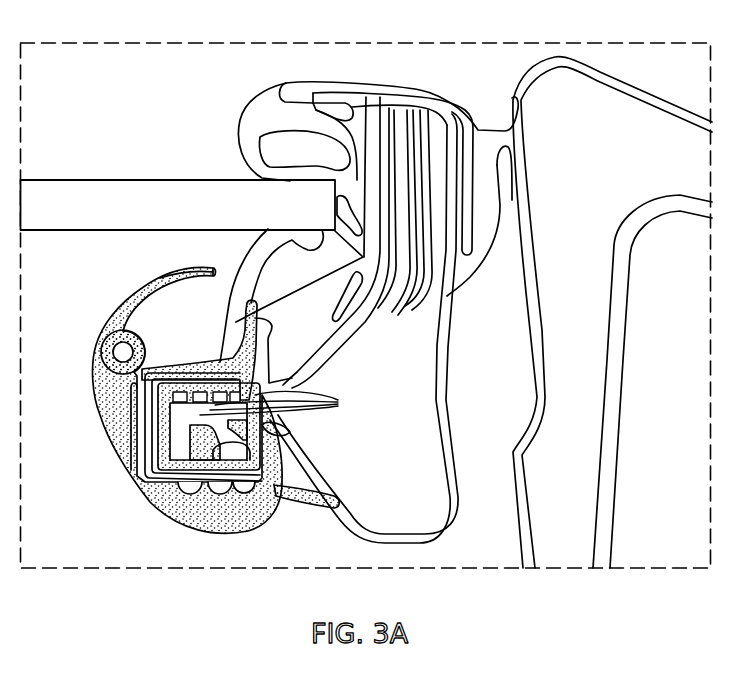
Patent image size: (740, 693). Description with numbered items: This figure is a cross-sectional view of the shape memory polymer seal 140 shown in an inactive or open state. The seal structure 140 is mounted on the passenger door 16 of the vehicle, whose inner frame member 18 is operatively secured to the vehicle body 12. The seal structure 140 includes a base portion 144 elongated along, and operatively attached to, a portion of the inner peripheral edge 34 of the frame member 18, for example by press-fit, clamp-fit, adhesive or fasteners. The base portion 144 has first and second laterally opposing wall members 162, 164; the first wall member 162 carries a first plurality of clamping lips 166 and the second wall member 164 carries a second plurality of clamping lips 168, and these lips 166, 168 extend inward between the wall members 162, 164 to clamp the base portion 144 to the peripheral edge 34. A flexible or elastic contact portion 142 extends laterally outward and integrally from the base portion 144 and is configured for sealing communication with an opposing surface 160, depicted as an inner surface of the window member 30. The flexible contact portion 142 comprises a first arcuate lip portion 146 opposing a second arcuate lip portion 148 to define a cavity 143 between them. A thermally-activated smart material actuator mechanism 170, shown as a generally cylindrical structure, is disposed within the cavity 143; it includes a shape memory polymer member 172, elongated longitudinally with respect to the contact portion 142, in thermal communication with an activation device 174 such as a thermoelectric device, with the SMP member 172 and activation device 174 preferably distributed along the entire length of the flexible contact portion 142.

The vehicle body 12 is at (640, 96).
The passenger door 16 is at (445, 407).
The inner frame member 18 is at (348, 345).
The window member 30 is at (113, 178).
The inner peripheral edge 34 is at (283, 437).
The shape memory polymer seal 140 is at (308, 520).
The flexible contact portion 142 is at (95, 322).
The cavity 143 is at (198, 282).
The base portion 144 is at (112, 453).
The first arcuate lip portion 146 is at (160, 272).
The second arcuate lip portion 148 is at (272, 328).
The surface 160 is at (153, 236).
The first wall member 162 is at (192, 500).
The second wall member 164 is at (250, 302).
The first plurality of clamping lips 166 is at (263, 505).
The second plurality of clamping lips 168 is at (287, 403).
The TASM actuator mechanism 170 is at (198, 268).
The shape memory polymer member 172 is at (103, 292).
The activation device 174 is at (97, 323).